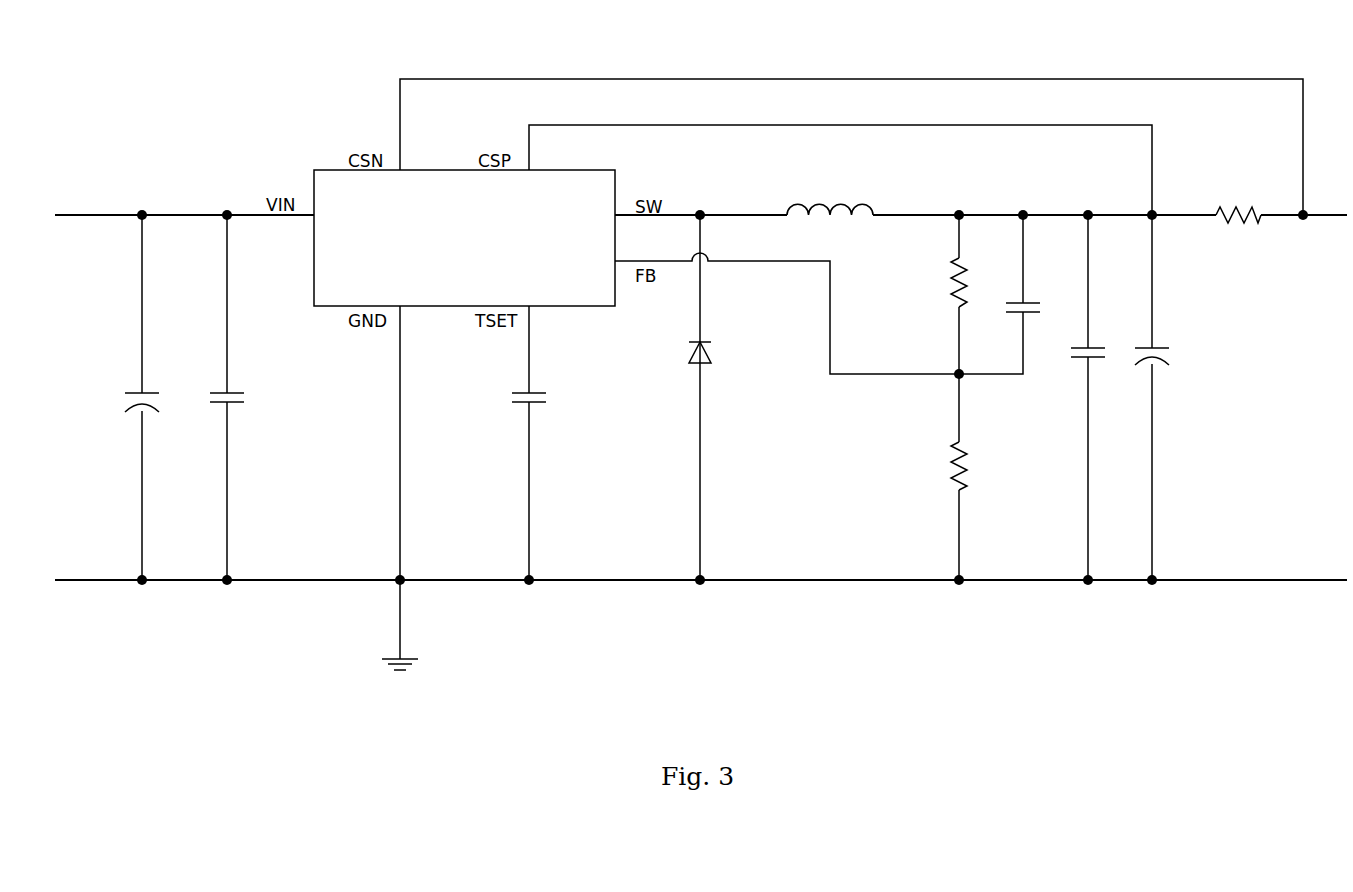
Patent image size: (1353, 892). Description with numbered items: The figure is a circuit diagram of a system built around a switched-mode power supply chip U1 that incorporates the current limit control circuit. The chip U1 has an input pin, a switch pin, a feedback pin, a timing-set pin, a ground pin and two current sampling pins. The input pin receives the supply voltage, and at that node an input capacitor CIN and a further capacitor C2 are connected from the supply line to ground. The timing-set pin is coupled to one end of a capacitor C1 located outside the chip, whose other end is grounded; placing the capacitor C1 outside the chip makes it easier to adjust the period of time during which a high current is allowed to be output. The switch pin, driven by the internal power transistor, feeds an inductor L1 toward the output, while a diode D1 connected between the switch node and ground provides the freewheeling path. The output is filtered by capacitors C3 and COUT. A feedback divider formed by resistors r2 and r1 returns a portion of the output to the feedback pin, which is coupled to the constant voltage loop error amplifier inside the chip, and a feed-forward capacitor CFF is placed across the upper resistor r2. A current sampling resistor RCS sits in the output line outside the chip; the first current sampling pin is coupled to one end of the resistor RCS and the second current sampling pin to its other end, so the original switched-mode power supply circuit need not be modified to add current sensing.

The switching regulator IC U1 is at (464, 238).
The input capacitor CIN is at (160, 397).
The capacitor C2 is at (242, 397).
The capacitor C1 is at (544, 397).
The diode D1 is at (715, 397).
The inductor L1 is at (830, 196).
The feedback resistor r2 is at (972, 294).
The feedback resistor r1 is at (972, 477).
The feed-forward capacitor CFF is at (1042, 265).
The output capacitor C3 is at (1103, 397).
The output capacitor COUT is at (1180, 397).
The current sampling resistor RCS is at (1238, 201).